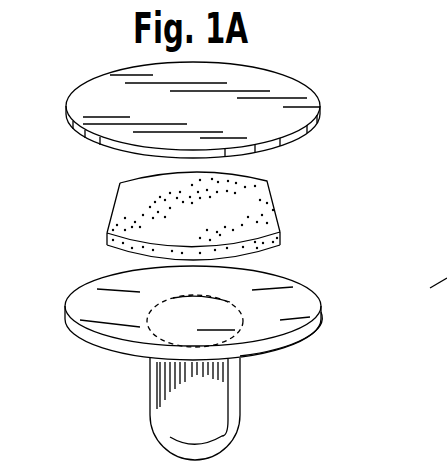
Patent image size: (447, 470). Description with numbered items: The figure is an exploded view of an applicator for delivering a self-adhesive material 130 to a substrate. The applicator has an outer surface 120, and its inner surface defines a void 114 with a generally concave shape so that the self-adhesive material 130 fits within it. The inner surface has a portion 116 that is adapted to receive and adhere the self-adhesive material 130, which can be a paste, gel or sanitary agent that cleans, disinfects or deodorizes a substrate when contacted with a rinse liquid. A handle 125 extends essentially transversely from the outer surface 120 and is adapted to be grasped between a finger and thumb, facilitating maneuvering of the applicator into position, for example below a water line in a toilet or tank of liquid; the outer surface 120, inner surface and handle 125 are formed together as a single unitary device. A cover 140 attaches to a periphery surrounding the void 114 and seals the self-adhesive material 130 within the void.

The cover 140 is at (262, 107).
The self-adhesive material 130 is at (137, 194).
The void 114 is at (297, 305).
The portion 116 is at (173, 298).
The outer surface 120 is at (262, 355).
The handle 125 is at (188, 417).